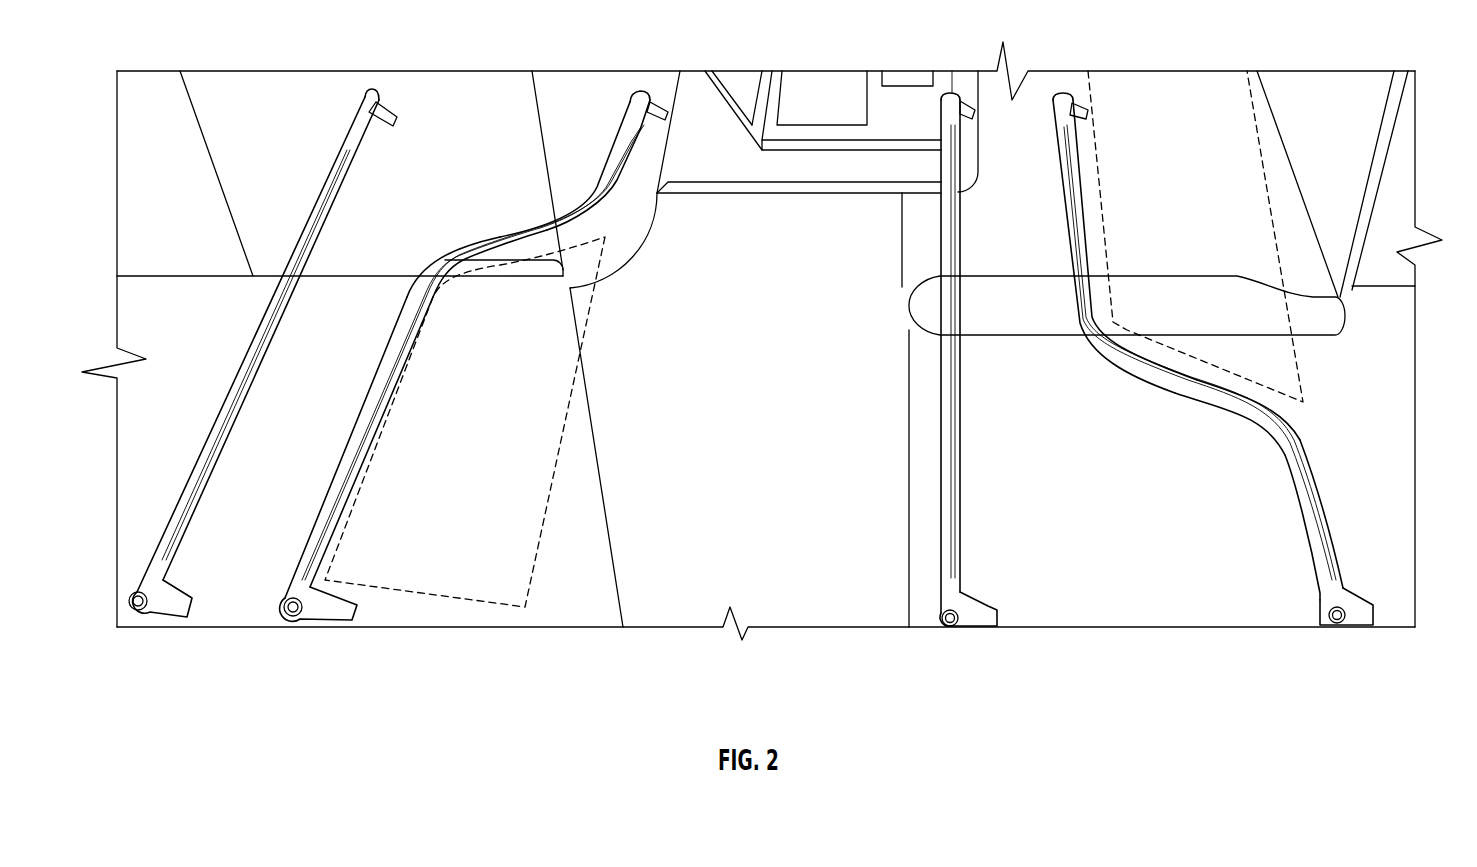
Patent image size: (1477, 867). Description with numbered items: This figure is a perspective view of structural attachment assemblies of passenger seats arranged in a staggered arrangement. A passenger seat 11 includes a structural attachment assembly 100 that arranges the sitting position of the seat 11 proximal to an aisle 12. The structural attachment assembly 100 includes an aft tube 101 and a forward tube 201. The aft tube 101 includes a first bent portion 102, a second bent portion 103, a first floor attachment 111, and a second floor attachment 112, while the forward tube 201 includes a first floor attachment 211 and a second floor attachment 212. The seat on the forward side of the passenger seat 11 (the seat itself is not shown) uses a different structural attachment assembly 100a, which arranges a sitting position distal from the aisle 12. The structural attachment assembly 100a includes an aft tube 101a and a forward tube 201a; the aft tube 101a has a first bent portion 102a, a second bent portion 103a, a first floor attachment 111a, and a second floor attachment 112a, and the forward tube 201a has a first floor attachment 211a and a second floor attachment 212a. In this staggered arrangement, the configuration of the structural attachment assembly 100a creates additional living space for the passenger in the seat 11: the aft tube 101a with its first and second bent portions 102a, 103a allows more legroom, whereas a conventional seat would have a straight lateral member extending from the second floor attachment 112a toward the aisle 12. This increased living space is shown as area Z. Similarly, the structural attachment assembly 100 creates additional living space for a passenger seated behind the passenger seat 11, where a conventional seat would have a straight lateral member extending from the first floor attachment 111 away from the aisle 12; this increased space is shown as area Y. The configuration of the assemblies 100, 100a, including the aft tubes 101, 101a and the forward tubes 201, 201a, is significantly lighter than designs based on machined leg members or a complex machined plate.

The structural attachment assembly 100 is at (1248, 352).
The structural attachment assembly 100a is at (492, 354).
The aft tube 101 is at (1317, 523).
The aft tube 101a is at (355, 430).
The first bent portion 102 is at (1295, 425).
The first bent portion 102a is at (440, 268).
The second bent portion 103 is at (1100, 350).
The second bent portion 103a is at (600, 210).
The first floor attachment 111 is at (1353, 632).
The first floor attachment 111a is at (347, 632).
The second floor attachment 112 is at (1083, 107).
The second floor attachment 112a is at (657, 106).
The forward tube 201 is at (927, 346).
The forward tube 201a is at (285, 362).
The first floor attachment 211 is at (970, 630).
The first floor attachment 211a is at (178, 632).
The second floor attachment 212 is at (967, 100).
The second floor attachment 212a is at (385, 113).
The passenger seat 11 is at (1323, 123).
The aisle 12 is at (835, 695).
The area Y is at (1194, 259).
The area Z is at (493, 440).